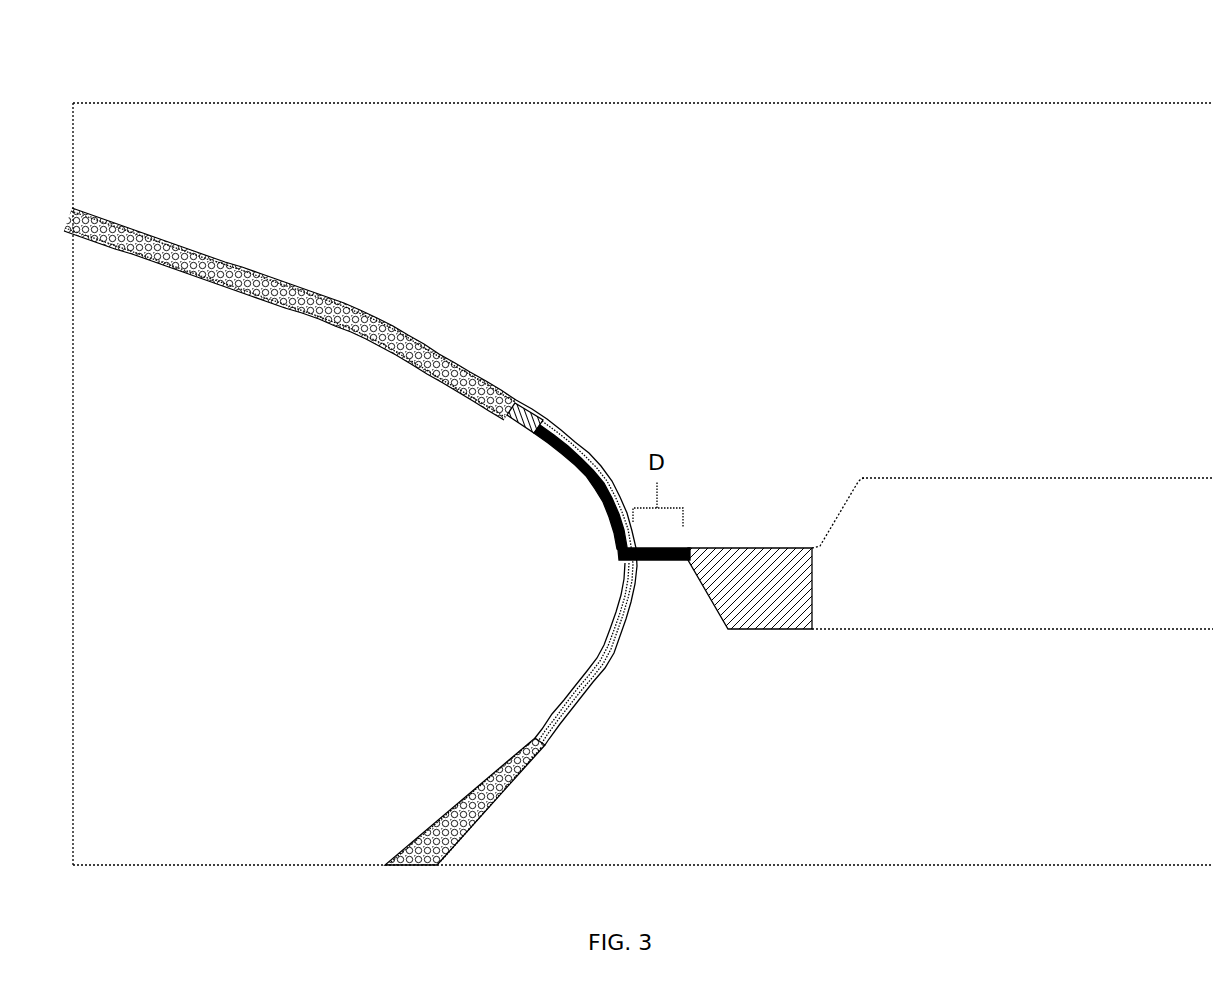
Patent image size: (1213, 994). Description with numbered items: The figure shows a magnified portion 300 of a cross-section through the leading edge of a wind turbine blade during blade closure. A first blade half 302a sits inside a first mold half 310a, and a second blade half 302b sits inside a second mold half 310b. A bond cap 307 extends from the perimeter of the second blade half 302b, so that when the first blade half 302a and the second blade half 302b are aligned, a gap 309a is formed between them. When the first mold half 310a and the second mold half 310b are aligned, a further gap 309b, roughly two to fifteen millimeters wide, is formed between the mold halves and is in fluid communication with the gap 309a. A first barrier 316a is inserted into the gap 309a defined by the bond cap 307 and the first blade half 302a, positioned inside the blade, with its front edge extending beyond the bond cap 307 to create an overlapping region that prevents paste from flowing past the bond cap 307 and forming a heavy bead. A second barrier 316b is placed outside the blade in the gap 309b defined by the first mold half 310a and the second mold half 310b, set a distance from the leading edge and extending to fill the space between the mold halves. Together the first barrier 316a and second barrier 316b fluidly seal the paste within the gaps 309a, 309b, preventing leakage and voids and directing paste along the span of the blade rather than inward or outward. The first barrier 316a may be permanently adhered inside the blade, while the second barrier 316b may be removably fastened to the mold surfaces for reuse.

The magnified portion 300 is at (182, 88).
The first blade half 302a is at (281, 272).
The second blade half 302b is at (512, 806).
The bond cap 307 is at (580, 480).
The gap 309a is at (598, 463).
The gap 309b is at (859, 523).
The first mold half 310a is at (1037, 452).
The second mold half 310b is at (1012, 657).
The first barrier 316a is at (515, 423).
The second barrier 316b is at (755, 580).